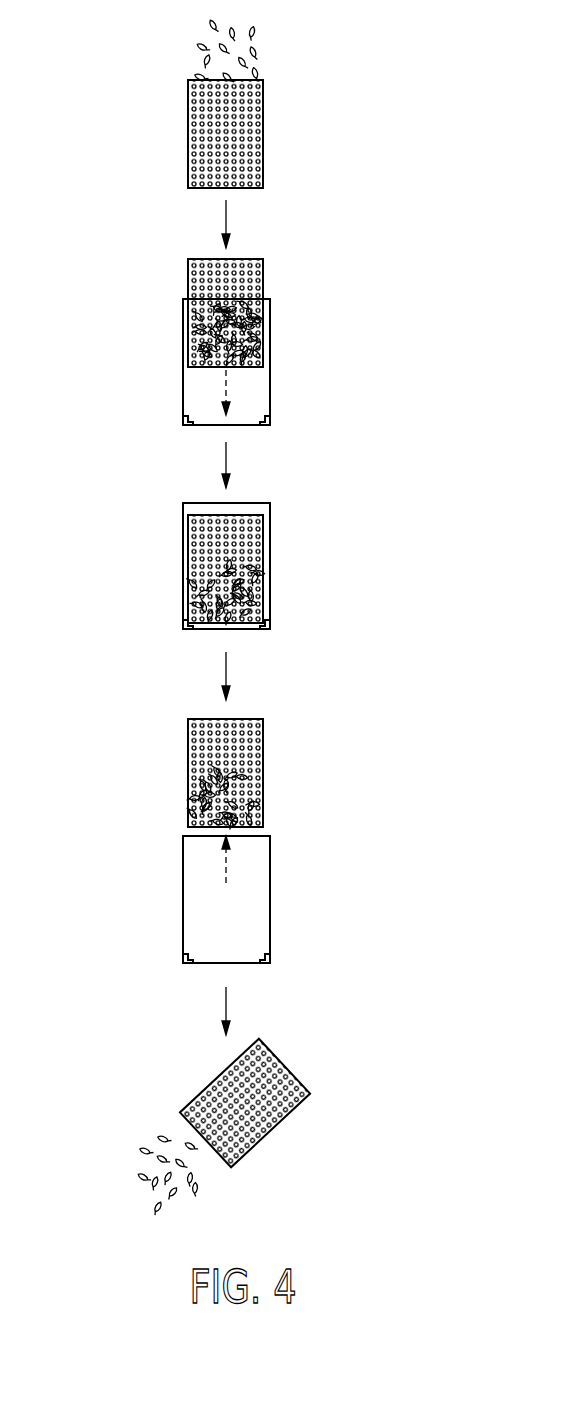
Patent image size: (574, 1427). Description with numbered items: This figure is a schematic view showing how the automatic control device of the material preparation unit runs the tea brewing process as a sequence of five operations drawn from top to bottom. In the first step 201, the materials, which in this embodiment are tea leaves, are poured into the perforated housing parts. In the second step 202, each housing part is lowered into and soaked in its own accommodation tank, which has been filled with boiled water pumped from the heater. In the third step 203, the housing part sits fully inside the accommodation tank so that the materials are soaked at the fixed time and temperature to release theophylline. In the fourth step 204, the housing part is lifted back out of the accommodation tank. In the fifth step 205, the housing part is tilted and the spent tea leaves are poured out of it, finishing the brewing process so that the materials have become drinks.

The first step 201 is at (263, 103).
The second step 202 is at (260, 340).
The third step 203 is at (258, 563).
The fourth step 204 is at (258, 841).
The fifth step 205 is at (244, 1127).